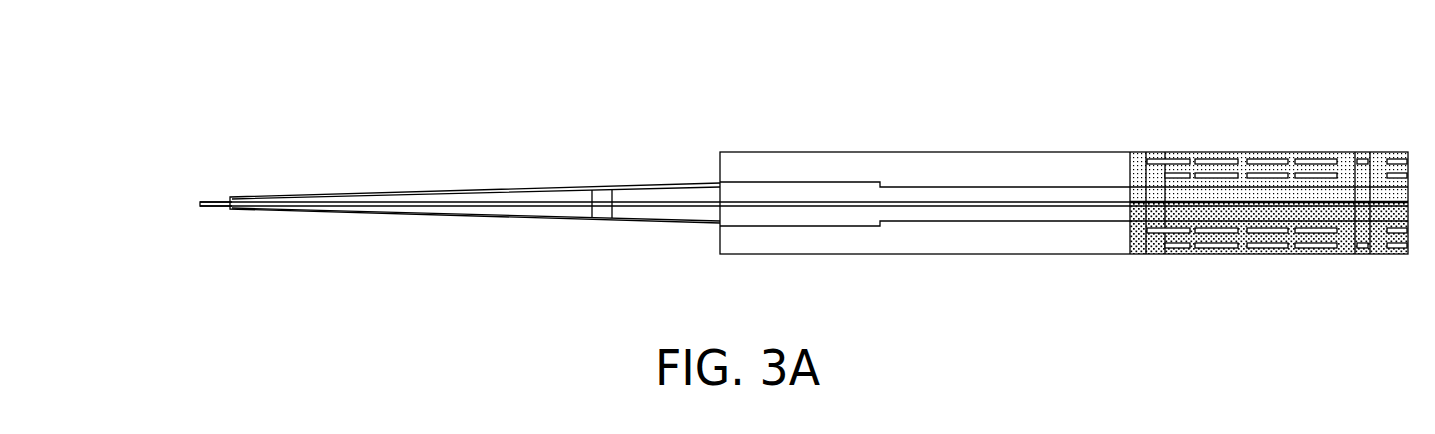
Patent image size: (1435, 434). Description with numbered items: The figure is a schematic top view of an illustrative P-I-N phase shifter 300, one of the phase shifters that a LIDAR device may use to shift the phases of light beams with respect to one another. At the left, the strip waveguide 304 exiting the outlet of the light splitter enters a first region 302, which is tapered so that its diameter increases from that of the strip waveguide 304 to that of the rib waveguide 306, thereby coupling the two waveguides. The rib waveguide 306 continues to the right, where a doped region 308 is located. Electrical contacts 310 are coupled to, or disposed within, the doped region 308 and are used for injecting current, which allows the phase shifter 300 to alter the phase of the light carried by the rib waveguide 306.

The P-I-N phase shifter 300 is at (133, 68).
The first region 302 is at (413, 191).
The strip waveguide 304 is at (200, 205).
The rib waveguide 306 is at (813, 202).
The doped region 308 is at (1206, 152).
The electrical contacts 310 is at (1195, 243).